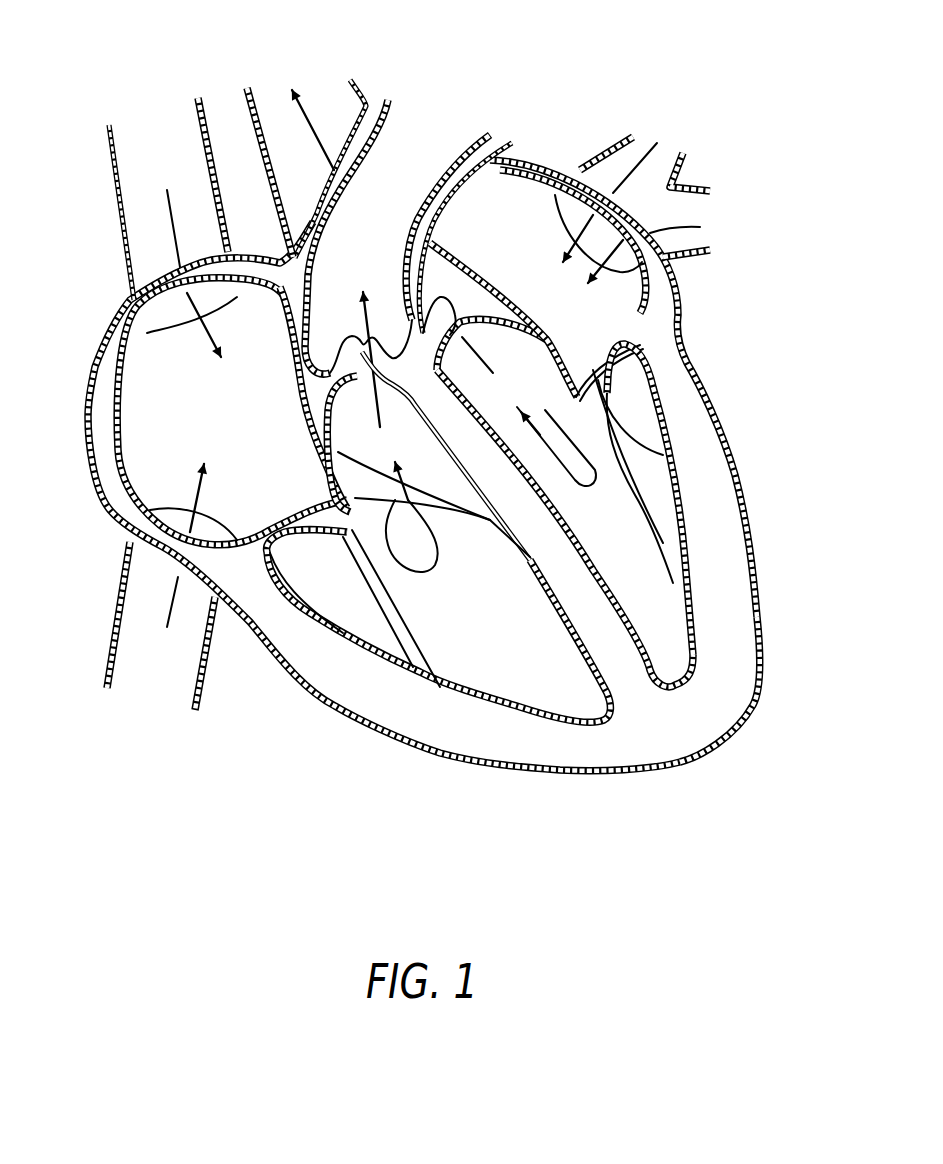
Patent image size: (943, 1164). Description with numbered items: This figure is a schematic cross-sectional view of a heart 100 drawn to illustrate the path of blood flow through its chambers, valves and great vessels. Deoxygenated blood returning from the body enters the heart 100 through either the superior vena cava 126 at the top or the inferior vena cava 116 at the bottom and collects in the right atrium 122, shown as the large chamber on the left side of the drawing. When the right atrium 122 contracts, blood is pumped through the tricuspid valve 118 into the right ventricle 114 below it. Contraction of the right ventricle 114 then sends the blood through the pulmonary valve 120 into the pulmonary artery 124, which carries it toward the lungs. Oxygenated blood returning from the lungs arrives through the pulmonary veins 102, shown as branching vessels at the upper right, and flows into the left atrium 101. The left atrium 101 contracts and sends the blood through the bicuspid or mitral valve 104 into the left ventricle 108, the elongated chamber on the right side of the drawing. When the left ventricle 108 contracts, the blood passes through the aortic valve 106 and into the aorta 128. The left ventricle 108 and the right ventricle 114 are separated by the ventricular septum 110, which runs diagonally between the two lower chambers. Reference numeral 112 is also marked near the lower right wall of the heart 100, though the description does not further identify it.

The heart 100 is at (473, 723).
The left atrium 101 is at (507, 193).
The pulmonary veins 102 is at (645, 162).
The bicuspid or mitral valve 104 is at (572, 327).
The aortic valve 106 is at (455, 337).
The left ventricle 108 is at (660, 490).
The ventricular septum 110 is at (590, 617).
The apex 112 is at (702, 690).
The right ventricle 114 is at (547, 677).
The inferior vena cava 116 is at (138, 662).
The tricuspid valve 118 is at (347, 533).
The pulmonary valve 120 is at (345, 432).
The right atrium 122 is at (147, 397).
The pulmonary artery 124 is at (343, 290).
The superior vena cava 126 is at (137, 197).
The aorta 128 is at (272, 137).